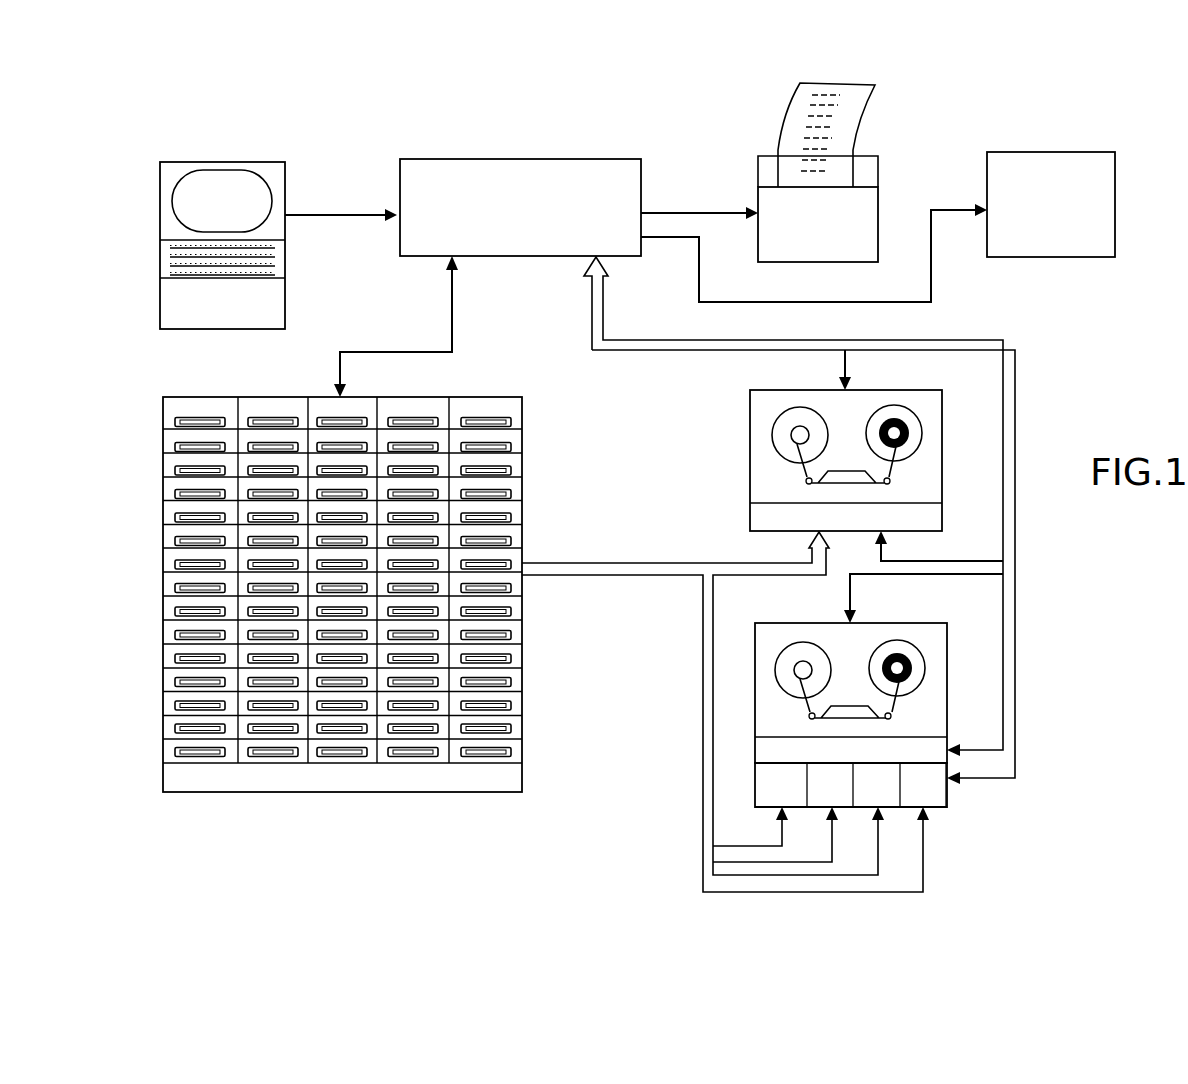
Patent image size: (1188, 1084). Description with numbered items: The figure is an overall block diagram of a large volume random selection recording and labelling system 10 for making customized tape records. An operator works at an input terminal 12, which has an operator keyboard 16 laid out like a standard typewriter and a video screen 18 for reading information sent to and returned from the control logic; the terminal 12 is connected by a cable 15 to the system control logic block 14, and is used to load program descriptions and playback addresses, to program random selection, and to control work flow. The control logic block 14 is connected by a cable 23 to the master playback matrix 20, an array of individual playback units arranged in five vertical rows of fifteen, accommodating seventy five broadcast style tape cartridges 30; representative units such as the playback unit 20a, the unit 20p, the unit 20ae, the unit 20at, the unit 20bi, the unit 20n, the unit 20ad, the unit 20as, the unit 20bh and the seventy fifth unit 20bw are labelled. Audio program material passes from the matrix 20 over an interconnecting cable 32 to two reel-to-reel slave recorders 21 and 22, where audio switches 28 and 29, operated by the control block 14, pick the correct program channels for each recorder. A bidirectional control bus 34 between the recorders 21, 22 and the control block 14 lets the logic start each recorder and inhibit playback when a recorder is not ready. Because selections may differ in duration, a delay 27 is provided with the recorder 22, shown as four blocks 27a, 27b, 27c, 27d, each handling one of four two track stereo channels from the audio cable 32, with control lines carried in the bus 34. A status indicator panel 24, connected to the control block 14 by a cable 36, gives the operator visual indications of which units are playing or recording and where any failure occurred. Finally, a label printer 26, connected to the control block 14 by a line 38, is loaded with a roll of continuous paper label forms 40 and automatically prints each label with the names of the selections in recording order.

The recording and labelling system 10 is at (612, 775).
The input terminal 12 is at (162, 238).
The system control logic block 14 is at (531, 159).
The cable 15 is at (343, 212).
The operator keyboard 16 is at (162, 264).
The video screen 18 is at (211, 206).
The master playback matrix 20 is at (140, 797).
The playback unit 20a is at (172, 413).
The playback unit 20p is at (286, 405).
The playback unit 20ae is at (353, 407).
The playback unit 20at is at (417, 405).
The playback unit 20bi is at (486, 405).
The playback unit 20n is at (172, 728).
The playback unit 20ad is at (292, 759).
The playback unit 20as is at (331, 760).
The playback unit 20bh is at (432, 760).
The playback unit 20bw is at (520, 753).
The slave recorder 21 is at (750, 456).
The slave recorder 22 is at (770, 628).
The cable 23 is at (454, 333).
The status indicator panel 24 is at (1079, 151).
The label printer 26 is at (878, 196).
The delay 27 is at (953, 813).
The delay block 27a is at (785, 785).
The delay block 27b is at (833, 785).
The delay block 27c is at (880, 785).
The delay block 27d is at (926, 785).
The audio switch 28 is at (750, 518).
The audio switch 29 is at (757, 757).
The tape cartridge 30 is at (253, 446).
The interconnecting cable 32 is at (631, 560).
The bidirectional control bus 34 is at (700, 341).
The cable 36 is at (892, 303).
The line 38 is at (719, 211).
The paper label forms 40 is at (852, 135).